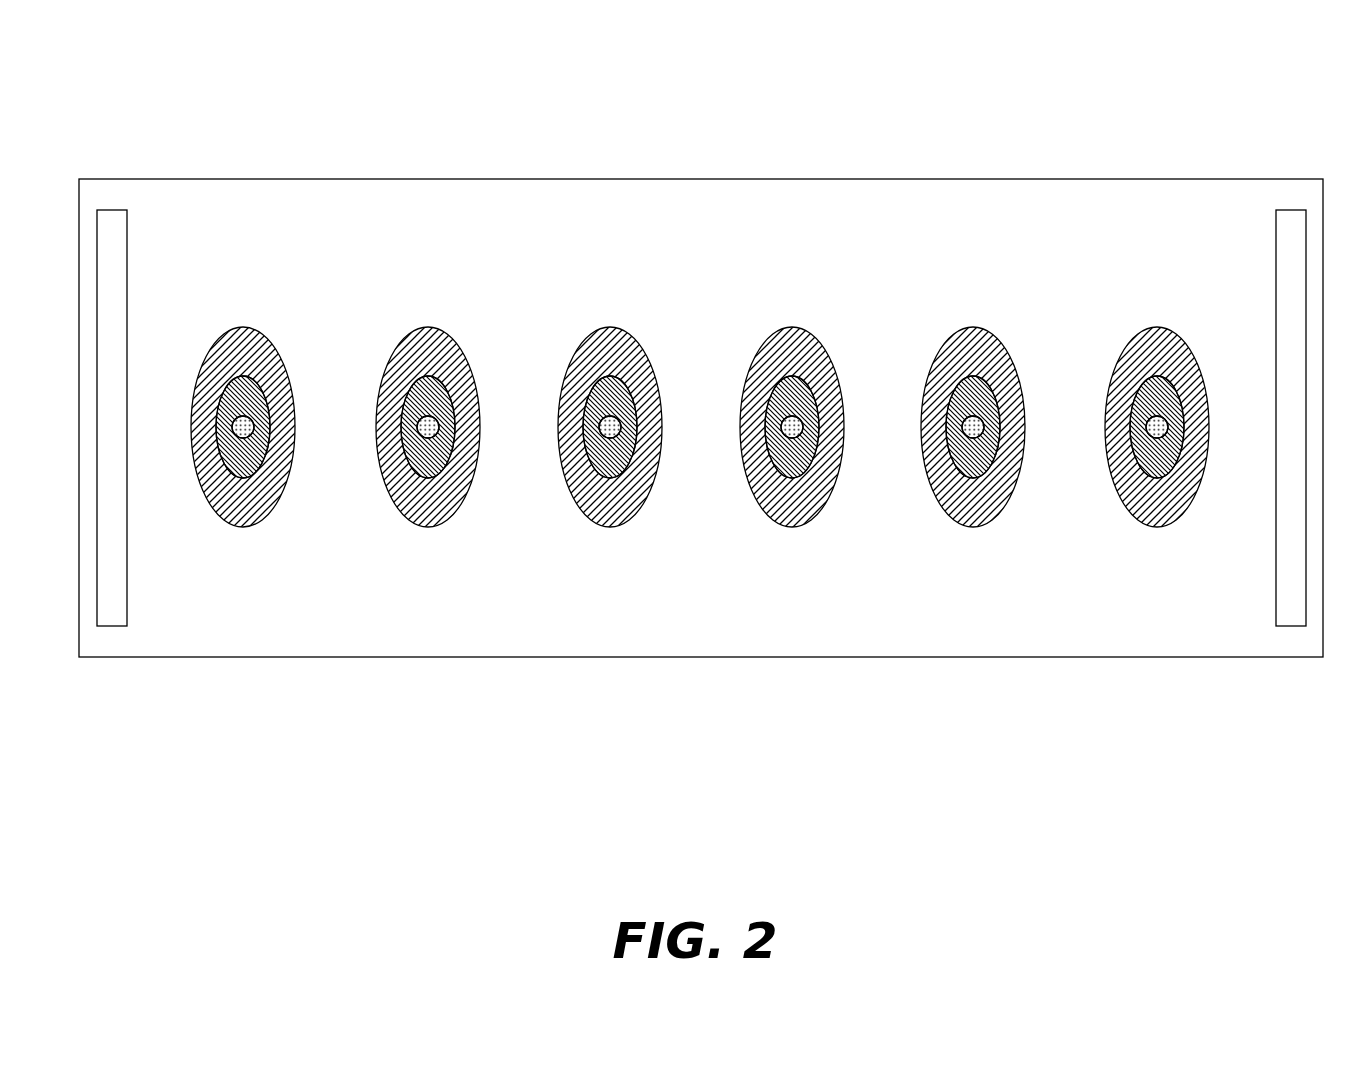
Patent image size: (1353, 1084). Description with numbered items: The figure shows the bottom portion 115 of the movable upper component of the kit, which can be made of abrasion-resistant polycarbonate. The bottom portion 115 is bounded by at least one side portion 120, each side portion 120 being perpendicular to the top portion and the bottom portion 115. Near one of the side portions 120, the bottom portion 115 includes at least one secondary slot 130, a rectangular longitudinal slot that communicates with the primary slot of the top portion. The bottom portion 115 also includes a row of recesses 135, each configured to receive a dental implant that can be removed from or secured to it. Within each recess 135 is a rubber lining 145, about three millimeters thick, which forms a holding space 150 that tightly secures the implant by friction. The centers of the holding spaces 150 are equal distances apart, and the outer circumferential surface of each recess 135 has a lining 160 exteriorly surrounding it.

The side portion 120 is at (246, 143).
The secondary slot 130 is at (113, 194).
The bottom portion 115 is at (406, 204).
The recess 135 is at (246, 358).
The rubber lining 145 is at (250, 458).
The holding space 150 is at (226, 444).
The lining 160 is at (618, 503).